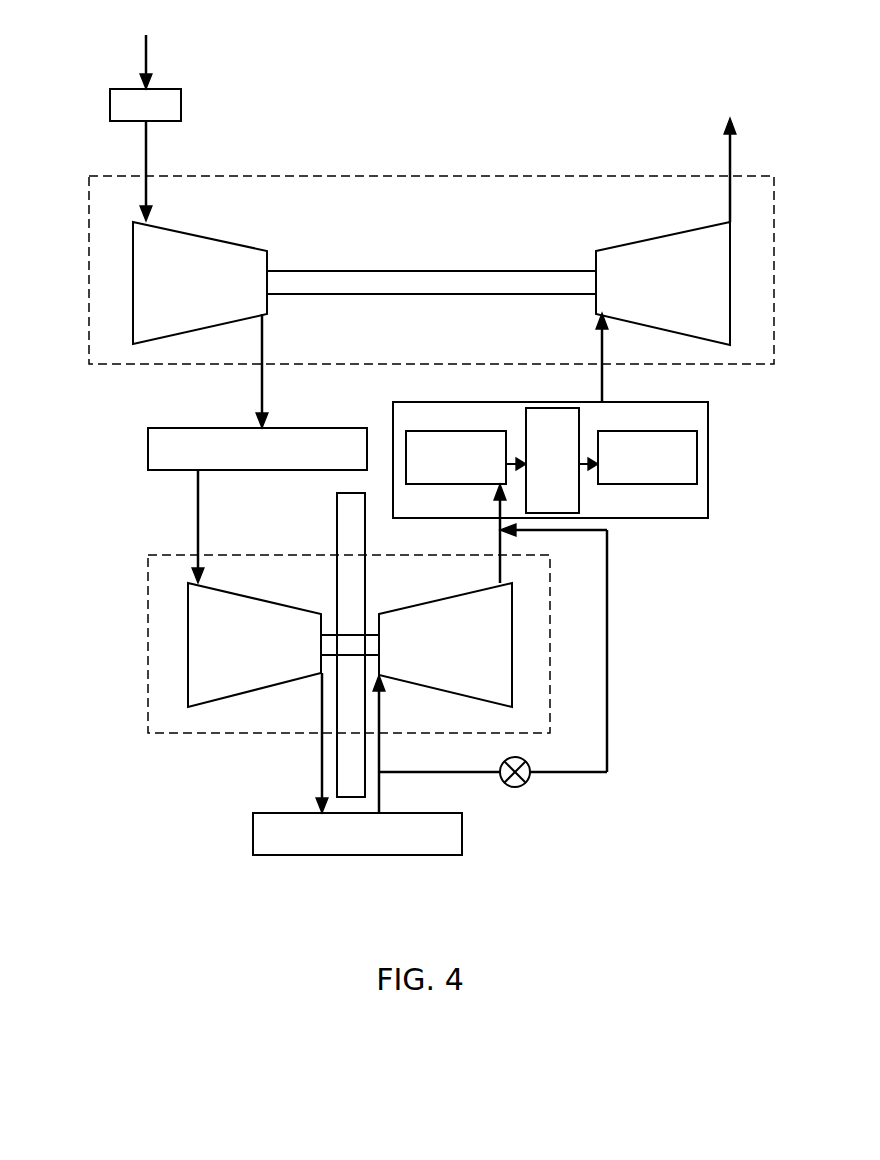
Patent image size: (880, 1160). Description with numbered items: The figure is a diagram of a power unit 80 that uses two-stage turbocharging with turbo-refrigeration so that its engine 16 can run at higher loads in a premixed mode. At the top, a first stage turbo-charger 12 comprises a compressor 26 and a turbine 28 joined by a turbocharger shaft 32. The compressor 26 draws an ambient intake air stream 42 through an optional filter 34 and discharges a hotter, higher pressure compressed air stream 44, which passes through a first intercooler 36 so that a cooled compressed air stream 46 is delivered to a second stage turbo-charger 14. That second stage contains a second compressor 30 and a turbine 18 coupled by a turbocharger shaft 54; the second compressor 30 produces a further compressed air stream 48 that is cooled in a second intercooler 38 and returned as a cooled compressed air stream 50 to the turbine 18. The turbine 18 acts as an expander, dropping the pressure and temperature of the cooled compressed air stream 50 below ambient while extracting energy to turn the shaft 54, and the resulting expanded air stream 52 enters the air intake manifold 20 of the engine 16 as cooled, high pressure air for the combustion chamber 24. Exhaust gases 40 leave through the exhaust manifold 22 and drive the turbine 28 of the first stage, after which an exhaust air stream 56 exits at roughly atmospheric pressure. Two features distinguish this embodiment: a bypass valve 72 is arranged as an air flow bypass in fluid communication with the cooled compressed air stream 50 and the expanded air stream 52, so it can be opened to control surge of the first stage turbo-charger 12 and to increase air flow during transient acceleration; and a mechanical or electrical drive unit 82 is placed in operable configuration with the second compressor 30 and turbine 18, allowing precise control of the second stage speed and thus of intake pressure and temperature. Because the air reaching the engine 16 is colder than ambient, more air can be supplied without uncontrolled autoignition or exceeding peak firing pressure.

The power unit 80 is at (500, 90).
The filter 34 is at (181, 104).
The ambient intake air stream 42 is at (146, 142).
The first stage turbo-charger 12 is at (89, 216).
The compressor 26 is at (133, 283).
The turbocharger shaft 32 is at (431, 271).
The turbine 28 is at (730, 280).
The exhaust air stream 56 is at (730, 188).
The compressed air stream 44 is at (260, 388).
The first intercooler 36 is at (148, 450).
The cooled compressed air stream 46 is at (196, 503).
The exhaust gases 40 is at (602, 373).
The engine 16 is at (708, 505).
The air intake manifold 20 is at (432, 431).
The combustion chamber 24 is at (547, 408).
The exhaust manifold 22 is at (697, 437).
The expanded air stream 52 is at (500, 545).
The mechanical or electrical drive 82 is at (337, 516).
The turbocharger shaft 54 is at (330, 635).
The second stage turbo-charger 14 is at (148, 703).
The second compressor 30 is at (188, 640).
The turbine 18 is at (513, 643).
The compressed air stream 48 is at (320, 752).
The cooled compressed air stream 50 is at (380, 760).
The bypass valve 72 is at (528, 782).
The second intercooler 38 is at (372, 856).